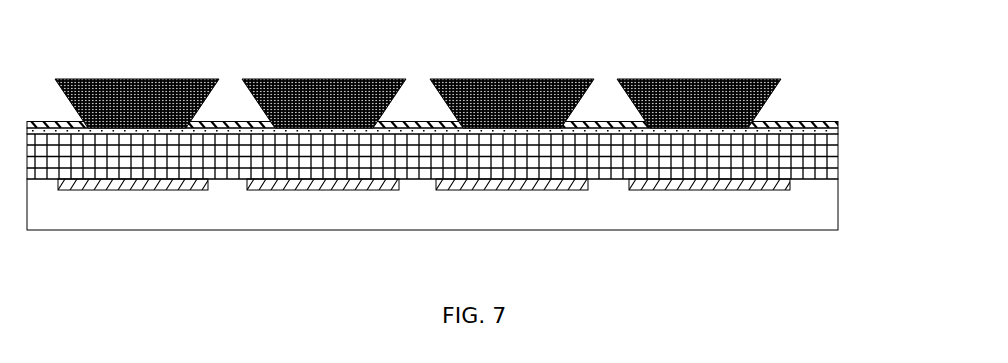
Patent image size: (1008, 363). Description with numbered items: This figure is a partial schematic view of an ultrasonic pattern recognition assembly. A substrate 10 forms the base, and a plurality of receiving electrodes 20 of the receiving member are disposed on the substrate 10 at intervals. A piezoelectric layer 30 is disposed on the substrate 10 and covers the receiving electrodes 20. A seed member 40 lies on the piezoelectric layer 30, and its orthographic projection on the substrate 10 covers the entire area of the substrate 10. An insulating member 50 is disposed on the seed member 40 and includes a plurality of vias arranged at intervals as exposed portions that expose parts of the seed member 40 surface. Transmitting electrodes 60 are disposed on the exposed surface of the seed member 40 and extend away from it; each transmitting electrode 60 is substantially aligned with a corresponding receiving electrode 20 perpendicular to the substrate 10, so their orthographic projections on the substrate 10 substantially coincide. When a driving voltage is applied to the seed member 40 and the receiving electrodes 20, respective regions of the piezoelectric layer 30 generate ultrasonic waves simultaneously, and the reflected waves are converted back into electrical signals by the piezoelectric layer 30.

The substrate 10 is at (813, 217).
The receiving electrode 20 is at (732, 182).
The piezoelectric layer 30 is at (811, 165).
The seed member 40 is at (813, 129).
The insulating member 50 is at (803, 122).
The transmitting electrode 60 is at (721, 81).